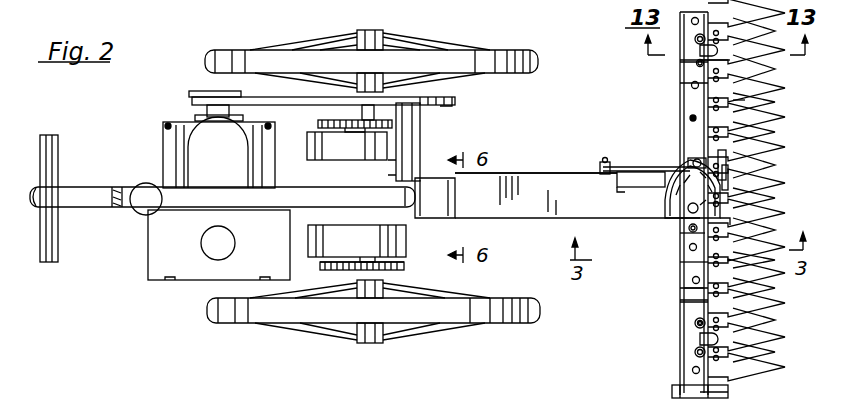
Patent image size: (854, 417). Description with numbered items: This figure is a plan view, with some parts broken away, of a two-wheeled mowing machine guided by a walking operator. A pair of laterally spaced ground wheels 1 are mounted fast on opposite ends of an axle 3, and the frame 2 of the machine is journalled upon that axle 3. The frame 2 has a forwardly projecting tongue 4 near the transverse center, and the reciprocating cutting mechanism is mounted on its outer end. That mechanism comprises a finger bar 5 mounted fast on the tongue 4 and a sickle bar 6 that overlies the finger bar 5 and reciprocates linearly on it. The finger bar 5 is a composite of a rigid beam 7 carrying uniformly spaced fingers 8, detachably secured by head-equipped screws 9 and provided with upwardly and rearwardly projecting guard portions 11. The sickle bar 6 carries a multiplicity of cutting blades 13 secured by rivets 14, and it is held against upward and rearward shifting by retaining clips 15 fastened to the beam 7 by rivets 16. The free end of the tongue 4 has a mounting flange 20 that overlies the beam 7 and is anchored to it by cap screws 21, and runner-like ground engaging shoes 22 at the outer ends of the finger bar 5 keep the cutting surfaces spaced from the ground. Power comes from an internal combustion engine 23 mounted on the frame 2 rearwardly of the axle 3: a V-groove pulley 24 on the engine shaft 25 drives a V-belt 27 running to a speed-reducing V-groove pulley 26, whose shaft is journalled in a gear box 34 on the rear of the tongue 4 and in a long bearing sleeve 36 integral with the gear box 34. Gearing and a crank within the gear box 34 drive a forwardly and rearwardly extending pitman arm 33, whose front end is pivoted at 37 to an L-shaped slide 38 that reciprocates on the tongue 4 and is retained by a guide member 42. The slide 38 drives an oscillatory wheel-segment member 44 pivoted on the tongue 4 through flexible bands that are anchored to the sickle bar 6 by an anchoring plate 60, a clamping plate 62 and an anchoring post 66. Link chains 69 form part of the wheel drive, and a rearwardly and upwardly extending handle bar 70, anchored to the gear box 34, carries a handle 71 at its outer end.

The ground wheels 1 is at (478, 62).
The frame 2 is at (293, 230).
The axle 3 is at (368, 116).
The frame tongue 4 is at (540, 198).
The finger bar 5 is at (681, 262).
The sickle bar 6 is at (742, 105).
The beam 7 is at (688, 288).
The fingers 8 is at (745, 152).
The head-equipped screws 9 is at (692, 119).
The guard portions 11 is at (750, 84).
The cutting blades 13 is at (718, 85).
The rivets 14 is at (706, 63).
The retaining clips 15 is at (706, 50).
The rivets 16 is at (696, 64).
The mounting flange 20 is at (686, 163).
The cap screws 21 is at (689, 228).
The ground engaging shoes 22 is at (730, 393).
The internal combustion engine 23 is at (203, 150).
The V-groove pulley 24 is at (222, 92).
The engine shaft 25 is at (213, 112).
The speed-reducing V-groove pulley 26 is at (455, 104).
The V-belt 27 is at (282, 97).
The pitman arm 33 is at (522, 173).
The gear box 34 is at (428, 212).
The bearing sleeve 36 is at (421, 135).
The pivot 37 is at (605, 162).
The slide 38 is at (603, 175).
The guide member 42 is at (632, 180).
The oscillatory member 44 is at (690, 192).
The anchoring plate 60 is at (728, 160).
The clamping plate 62 is at (730, 192).
The anchoring post 66 is at (730, 224).
The link chains 69 is at (330, 270).
The handle bar 70 is at (96, 210).
The handle 71 is at (52, 160).